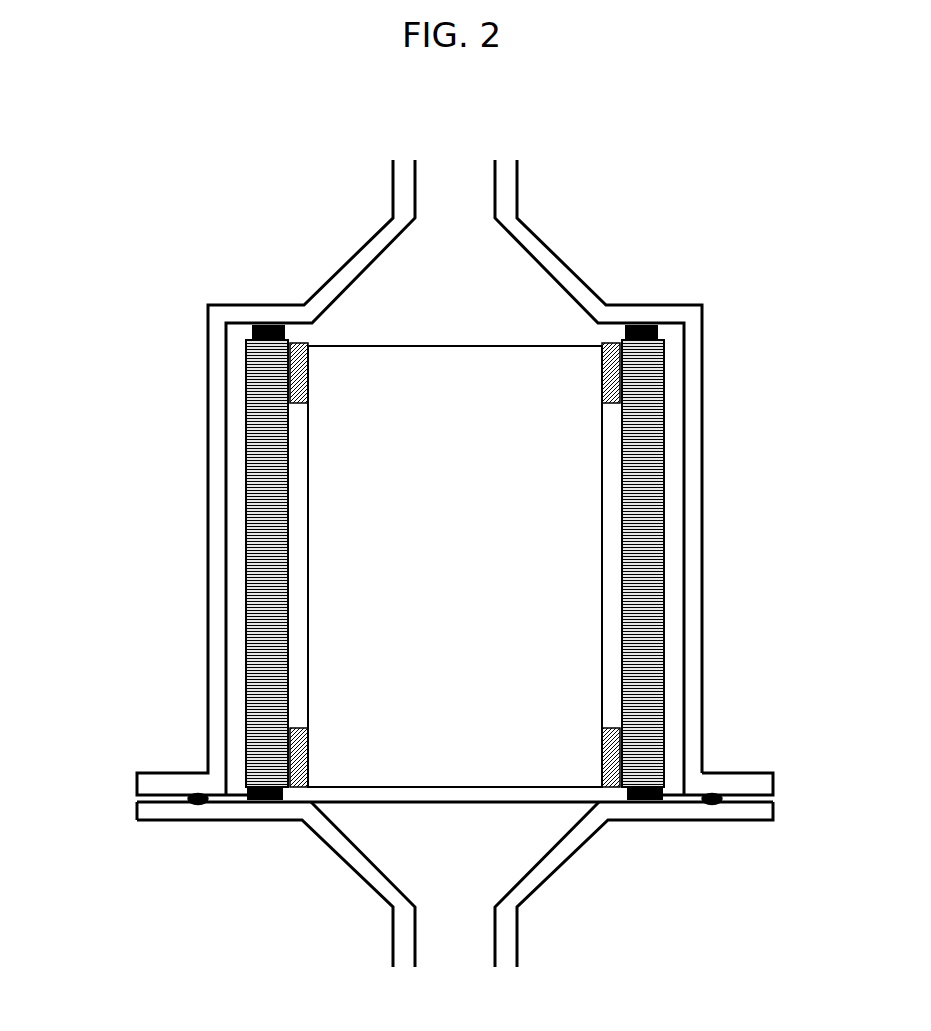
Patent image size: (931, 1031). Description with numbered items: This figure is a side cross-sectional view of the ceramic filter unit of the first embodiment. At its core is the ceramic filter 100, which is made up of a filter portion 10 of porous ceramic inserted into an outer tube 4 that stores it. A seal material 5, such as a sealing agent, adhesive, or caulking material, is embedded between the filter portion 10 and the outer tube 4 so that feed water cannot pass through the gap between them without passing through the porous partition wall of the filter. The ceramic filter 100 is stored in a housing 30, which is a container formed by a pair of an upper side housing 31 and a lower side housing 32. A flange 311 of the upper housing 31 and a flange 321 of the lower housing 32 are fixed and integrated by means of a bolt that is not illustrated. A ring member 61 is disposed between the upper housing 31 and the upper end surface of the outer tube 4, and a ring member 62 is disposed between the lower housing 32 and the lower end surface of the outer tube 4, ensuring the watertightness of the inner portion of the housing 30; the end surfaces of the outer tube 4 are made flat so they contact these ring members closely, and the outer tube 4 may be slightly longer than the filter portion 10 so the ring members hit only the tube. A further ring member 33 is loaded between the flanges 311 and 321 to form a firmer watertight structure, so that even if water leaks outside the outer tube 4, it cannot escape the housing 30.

The housing 30 is at (437, 563).
The upper side housing 31 is at (238, 310).
The flange of the upper housing 311 is at (740, 772).
The lower side housing 32 is at (226, 818).
The flange of the lower housing 321 is at (740, 820).
The ring member 33 is at (195, 804).
The outer tube 4 is at (647, 518).
The seal material 5 is at (627, 375).
The ring member 61 is at (252, 338).
The ring member 62 is at (268, 805).
The filter portion 10 is at (420, 378).
The ceramic filter 100 is at (468, 580).